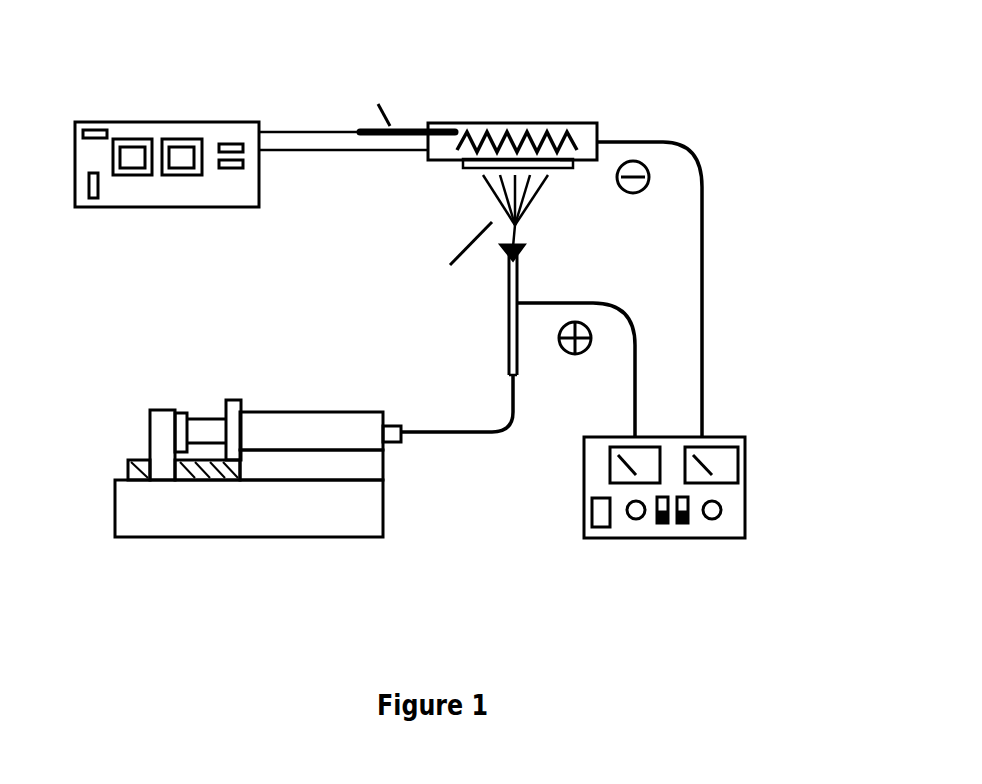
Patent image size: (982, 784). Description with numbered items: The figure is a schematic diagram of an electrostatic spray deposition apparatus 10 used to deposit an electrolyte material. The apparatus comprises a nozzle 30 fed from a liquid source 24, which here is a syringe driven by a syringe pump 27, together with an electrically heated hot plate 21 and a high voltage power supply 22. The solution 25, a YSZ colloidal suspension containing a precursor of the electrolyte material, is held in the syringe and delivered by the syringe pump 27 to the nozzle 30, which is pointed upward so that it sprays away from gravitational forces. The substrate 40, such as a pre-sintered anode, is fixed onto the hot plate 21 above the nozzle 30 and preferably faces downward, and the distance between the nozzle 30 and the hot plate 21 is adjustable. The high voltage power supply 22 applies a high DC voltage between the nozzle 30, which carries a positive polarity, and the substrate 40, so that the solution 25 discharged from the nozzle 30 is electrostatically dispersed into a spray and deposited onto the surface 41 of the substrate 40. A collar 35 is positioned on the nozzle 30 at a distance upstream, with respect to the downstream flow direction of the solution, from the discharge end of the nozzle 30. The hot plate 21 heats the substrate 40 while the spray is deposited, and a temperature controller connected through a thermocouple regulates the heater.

The electrostatic spray deposition apparatus 10 is at (770, 122).
The hot plate 21 is at (547, 125).
The high voltage power supply 22 is at (680, 523).
The liquid source 24 is at (105, 372).
The solution 25 is at (325, 428).
The syringe pump 27 is at (251, 514).
The nozzle 30 is at (508, 290).
The collar 35 is at (518, 252).
The substrate 40 is at (465, 166).
The surface 41 is at (572, 168).